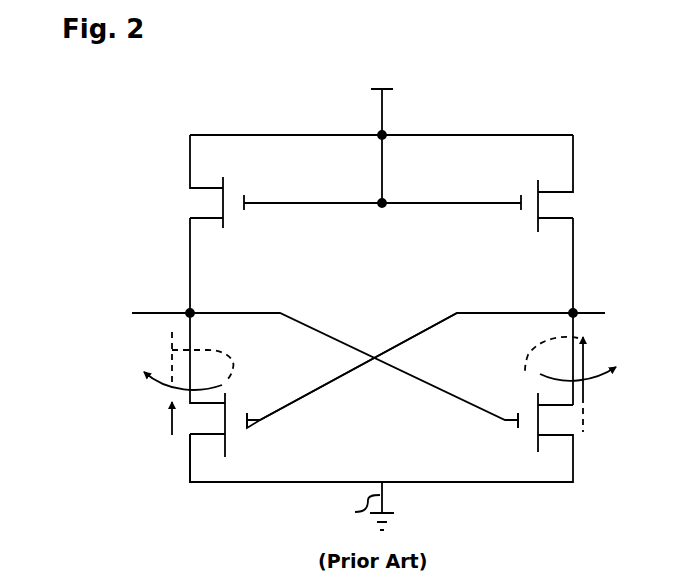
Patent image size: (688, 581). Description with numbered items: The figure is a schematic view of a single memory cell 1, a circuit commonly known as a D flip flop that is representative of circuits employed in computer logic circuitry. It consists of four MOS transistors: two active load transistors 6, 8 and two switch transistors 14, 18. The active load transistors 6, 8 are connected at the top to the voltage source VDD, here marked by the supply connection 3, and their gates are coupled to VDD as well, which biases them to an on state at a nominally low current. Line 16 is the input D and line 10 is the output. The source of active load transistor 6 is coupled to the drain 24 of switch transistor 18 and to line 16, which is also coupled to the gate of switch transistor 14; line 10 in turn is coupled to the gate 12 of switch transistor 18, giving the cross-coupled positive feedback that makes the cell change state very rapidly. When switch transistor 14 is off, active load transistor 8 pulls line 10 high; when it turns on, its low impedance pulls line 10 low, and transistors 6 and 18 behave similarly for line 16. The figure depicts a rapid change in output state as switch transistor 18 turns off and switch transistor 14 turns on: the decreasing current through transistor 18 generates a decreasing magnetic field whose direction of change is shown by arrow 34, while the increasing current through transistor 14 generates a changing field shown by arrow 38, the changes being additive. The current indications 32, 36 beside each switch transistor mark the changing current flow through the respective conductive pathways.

The memory cell 1 is at (172, 124).
The supply voltage node VDD 3 is at (382, 95).
The active load transistor 6 is at (228, 190).
The active load transistor 8 is at (536, 188).
The output line 10 is at (579, 311).
The gate of switch transistor 18 12 is at (250, 424).
The switch transistor 14 is at (536, 405).
The input line 16 is at (178, 311).
The switch transistor 18 is at (228, 410).
The drain of switch transistor 18 24 is at (190, 460).
The current flow path 32 is at (170, 340).
The arrow 34 is at (222, 380).
The current flow path 36 is at (588, 358).
The arrow 38 is at (542, 374).